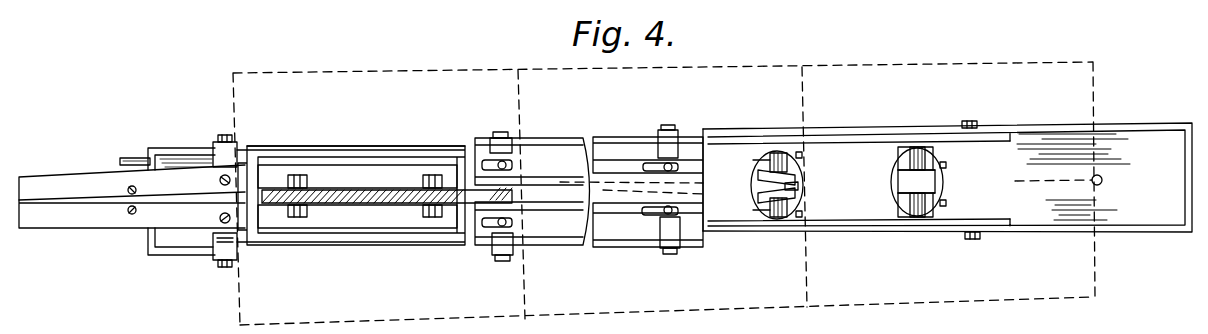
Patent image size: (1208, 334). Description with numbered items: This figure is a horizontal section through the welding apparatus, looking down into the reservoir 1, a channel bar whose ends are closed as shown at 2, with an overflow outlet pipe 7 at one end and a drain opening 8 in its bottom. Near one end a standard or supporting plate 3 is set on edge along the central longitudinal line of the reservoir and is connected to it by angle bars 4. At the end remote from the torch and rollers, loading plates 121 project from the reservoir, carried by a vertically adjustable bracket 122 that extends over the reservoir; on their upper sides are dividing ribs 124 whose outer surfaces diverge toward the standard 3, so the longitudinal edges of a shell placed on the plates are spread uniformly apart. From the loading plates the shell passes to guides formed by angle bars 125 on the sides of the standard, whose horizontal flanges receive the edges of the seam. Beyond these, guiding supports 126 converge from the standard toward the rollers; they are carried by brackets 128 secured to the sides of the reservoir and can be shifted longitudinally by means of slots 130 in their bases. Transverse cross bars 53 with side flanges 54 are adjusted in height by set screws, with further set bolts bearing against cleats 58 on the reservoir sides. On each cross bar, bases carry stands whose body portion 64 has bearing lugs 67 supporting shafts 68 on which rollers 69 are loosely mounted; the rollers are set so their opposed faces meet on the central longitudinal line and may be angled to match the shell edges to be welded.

The reservoir 1 is at (383, 146).
The closed ends of reservoir 2 is at (150, 243).
The standard or supporting plate 3 is at (392, 197).
The angle bars 4 is at (328, 155).
The overflow outlet pipe 7 is at (133, 160).
The drain opening 8 is at (1101, 176).
The cross bars 53 is at (762, 175).
The side flanges or extensions 54 is at (802, 153).
The flanges or cleats 58 is at (867, 143).
The body portion of stand 64 is at (760, 163).
The bearing lugs 67 is at (772, 163).
The shafts 68 is at (783, 165).
The rollers 69 is at (798, 188).
The loading plates 121 is at (58, 180).
The bracket 122 is at (233, 148).
The dividing ribs 124 is at (180, 198).
The angle bars (guides) 125 is at (350, 173).
The guiding supports 126 is at (533, 177).
The brackets 128 is at (502, 255).
The slots 130 is at (483, 162).